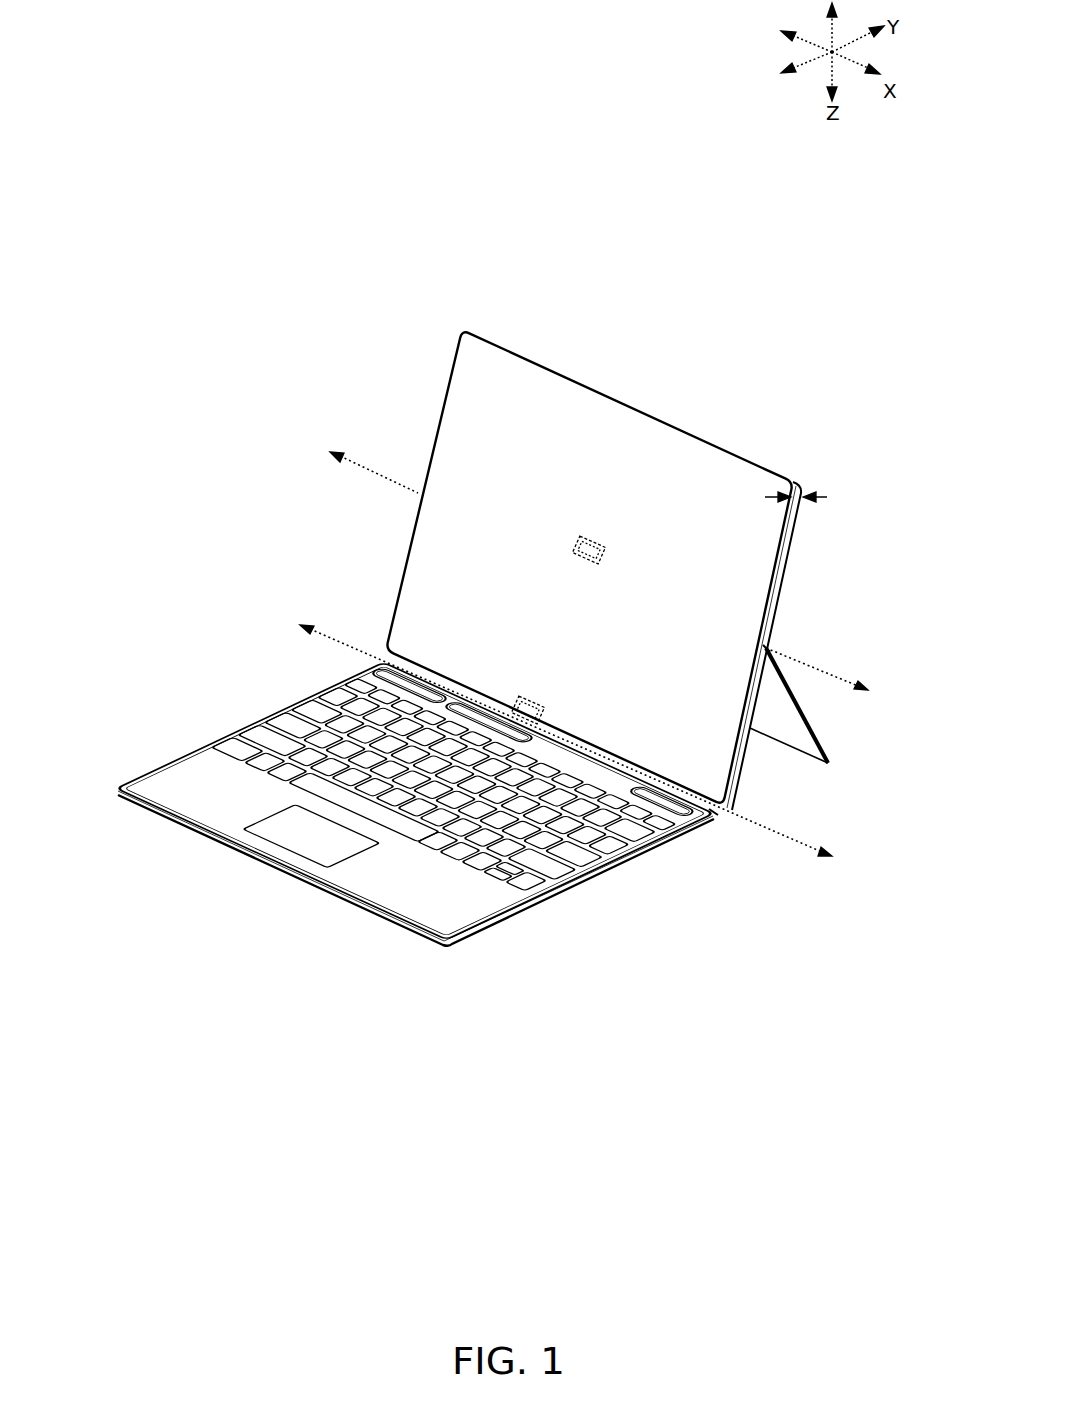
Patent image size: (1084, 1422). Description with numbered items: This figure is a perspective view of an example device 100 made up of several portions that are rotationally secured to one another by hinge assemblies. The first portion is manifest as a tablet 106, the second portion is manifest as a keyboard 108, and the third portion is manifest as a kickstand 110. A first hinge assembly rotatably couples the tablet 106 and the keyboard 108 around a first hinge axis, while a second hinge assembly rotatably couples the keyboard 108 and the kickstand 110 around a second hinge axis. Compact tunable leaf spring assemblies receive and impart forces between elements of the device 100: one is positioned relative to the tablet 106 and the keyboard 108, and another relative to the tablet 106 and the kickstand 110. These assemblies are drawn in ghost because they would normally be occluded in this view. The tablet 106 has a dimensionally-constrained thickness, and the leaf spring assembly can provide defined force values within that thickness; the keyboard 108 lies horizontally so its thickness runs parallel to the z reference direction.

The device 100 is at (168, 180).
The tablet 106 is at (640, 474).
The keyboard 108 is at (452, 912).
The kickstand 110 is at (792, 752).